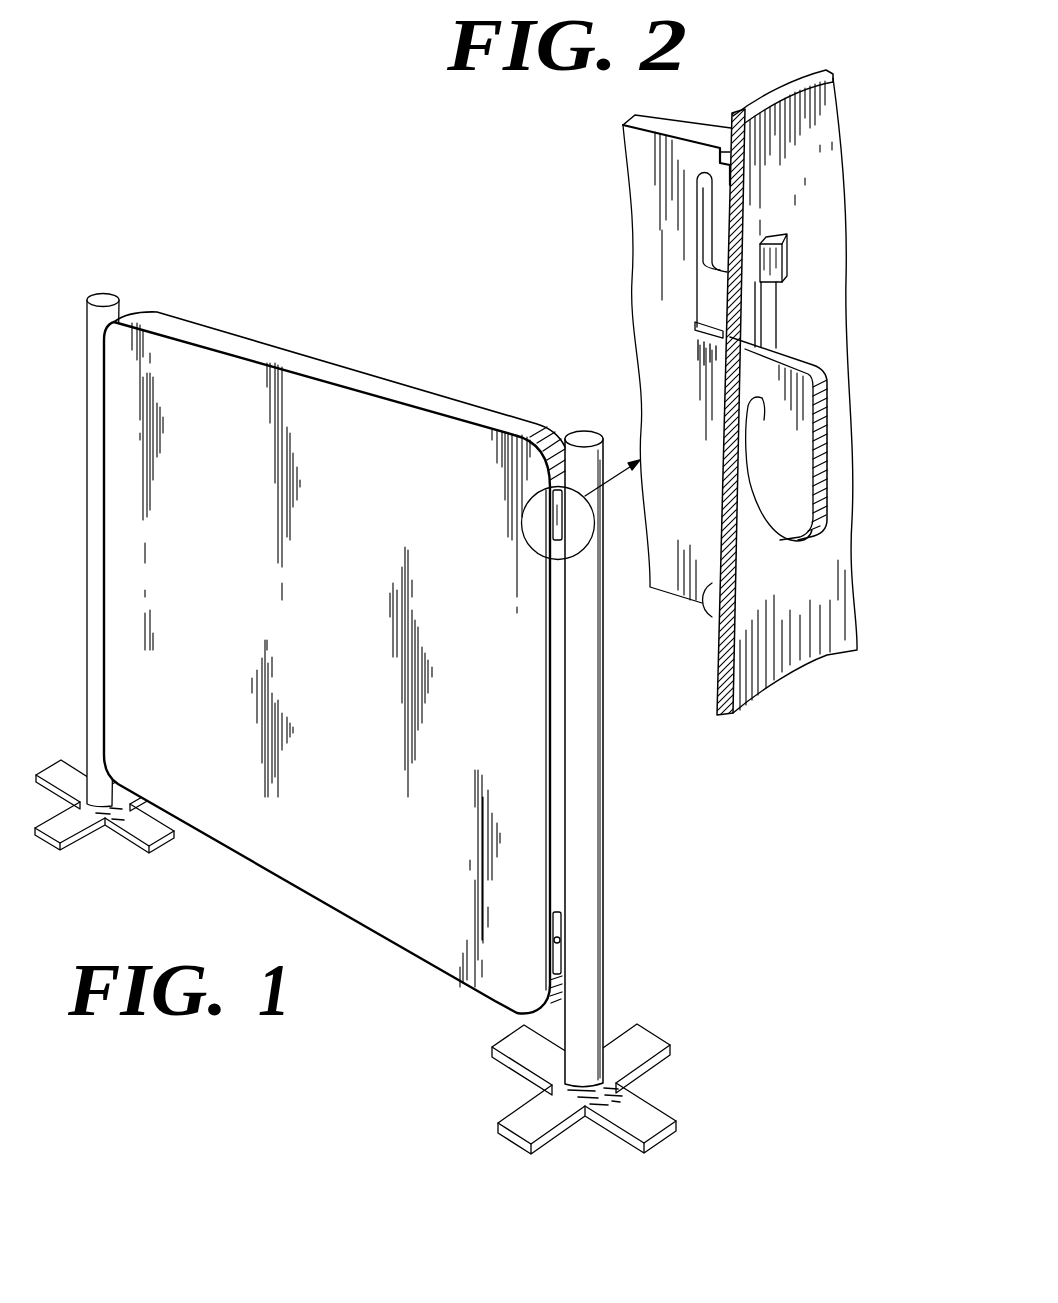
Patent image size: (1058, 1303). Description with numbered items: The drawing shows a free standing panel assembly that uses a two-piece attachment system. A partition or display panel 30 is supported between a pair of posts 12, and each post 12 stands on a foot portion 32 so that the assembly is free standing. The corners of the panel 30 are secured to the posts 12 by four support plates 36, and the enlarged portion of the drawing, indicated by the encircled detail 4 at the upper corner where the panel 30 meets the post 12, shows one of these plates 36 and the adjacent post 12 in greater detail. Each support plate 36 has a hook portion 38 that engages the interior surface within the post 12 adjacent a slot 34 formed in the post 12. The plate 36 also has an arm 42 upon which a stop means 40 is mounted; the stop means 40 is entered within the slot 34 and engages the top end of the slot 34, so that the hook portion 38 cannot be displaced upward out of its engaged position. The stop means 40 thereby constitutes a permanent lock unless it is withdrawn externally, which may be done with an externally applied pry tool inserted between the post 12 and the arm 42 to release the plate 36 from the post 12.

In FIG. 1, the post 12 is at (98, 454).
In FIG. 1, the display panel 30 is at (332, 601).
In FIG. 1, the foot portion 32 is at (67, 838).
In FIG. 1, the detail circle 4 is at (526, 541).
In FIG. 2, the slot 34 is at (772, 318).
In FIG. 2, the support plate 36 is at (663, 255).
In FIG. 2, the hook portion 38 is at (797, 522).
In FIG. 2, the stop means 40 is at (782, 263).
In FIG. 2, the arm 42 is at (717, 212).